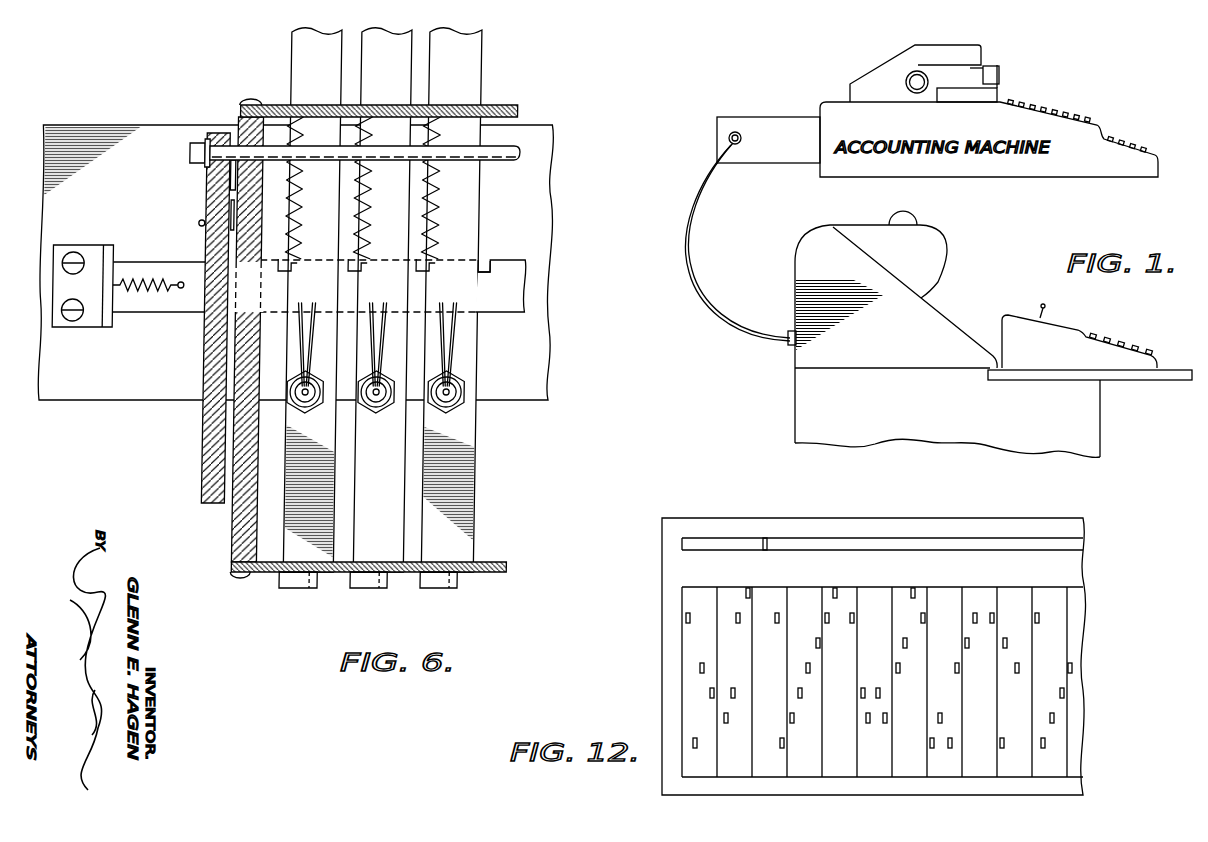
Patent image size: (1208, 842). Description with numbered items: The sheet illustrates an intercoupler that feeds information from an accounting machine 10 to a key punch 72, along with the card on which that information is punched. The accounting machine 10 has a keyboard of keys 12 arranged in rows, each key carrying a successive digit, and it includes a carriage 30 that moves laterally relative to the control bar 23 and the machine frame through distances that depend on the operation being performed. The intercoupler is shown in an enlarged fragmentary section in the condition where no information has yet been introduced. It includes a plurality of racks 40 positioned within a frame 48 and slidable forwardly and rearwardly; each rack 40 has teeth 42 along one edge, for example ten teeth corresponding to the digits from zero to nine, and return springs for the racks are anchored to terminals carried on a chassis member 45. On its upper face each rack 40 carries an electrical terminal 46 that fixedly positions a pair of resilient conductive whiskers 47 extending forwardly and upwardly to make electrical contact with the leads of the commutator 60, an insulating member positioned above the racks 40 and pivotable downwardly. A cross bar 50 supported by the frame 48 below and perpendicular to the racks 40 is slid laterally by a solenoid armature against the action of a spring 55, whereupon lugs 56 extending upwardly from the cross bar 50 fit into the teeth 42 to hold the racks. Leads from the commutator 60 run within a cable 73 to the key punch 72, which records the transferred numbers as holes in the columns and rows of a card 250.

In FIG. 1, the accounting machine 10 is at (1107, 137).
In FIG. 1, the keys 12 is at (1054, 108).
In FIG. 1, the control bar 23 is at (1001, 73).
In FIG. 1, the carriage 30 is at (872, 63).
In FIG. 6, the racks 40 is at (293, 40).
In FIG. 6, the teeth 42 is at (289, 130).
In FIG. 6, the chassis member 45 is at (540, 148).
In FIG. 6, the electrical terminal 46 is at (471, 386).
In FIG. 6, the resilient whiskers 47 is at (372, 331).
In FIG. 6, the frame 48 is at (236, 527).
In FIG. 1, the frame 48 is at (770, 118).
In FIG. 6, the cross bar 50 is at (524, 300).
In FIG. 6, the spring 55 is at (160, 298).
In FIG. 6, the lugs 56 is at (440, 258).
In FIG. 6, the commutator 60 is at (203, 433).
In FIG. 1, the key punch 72 is at (954, 311).
In FIG. 1, the cable 73 is at (745, 340).
In FIG. 12, the card 250 is at (961, 528).